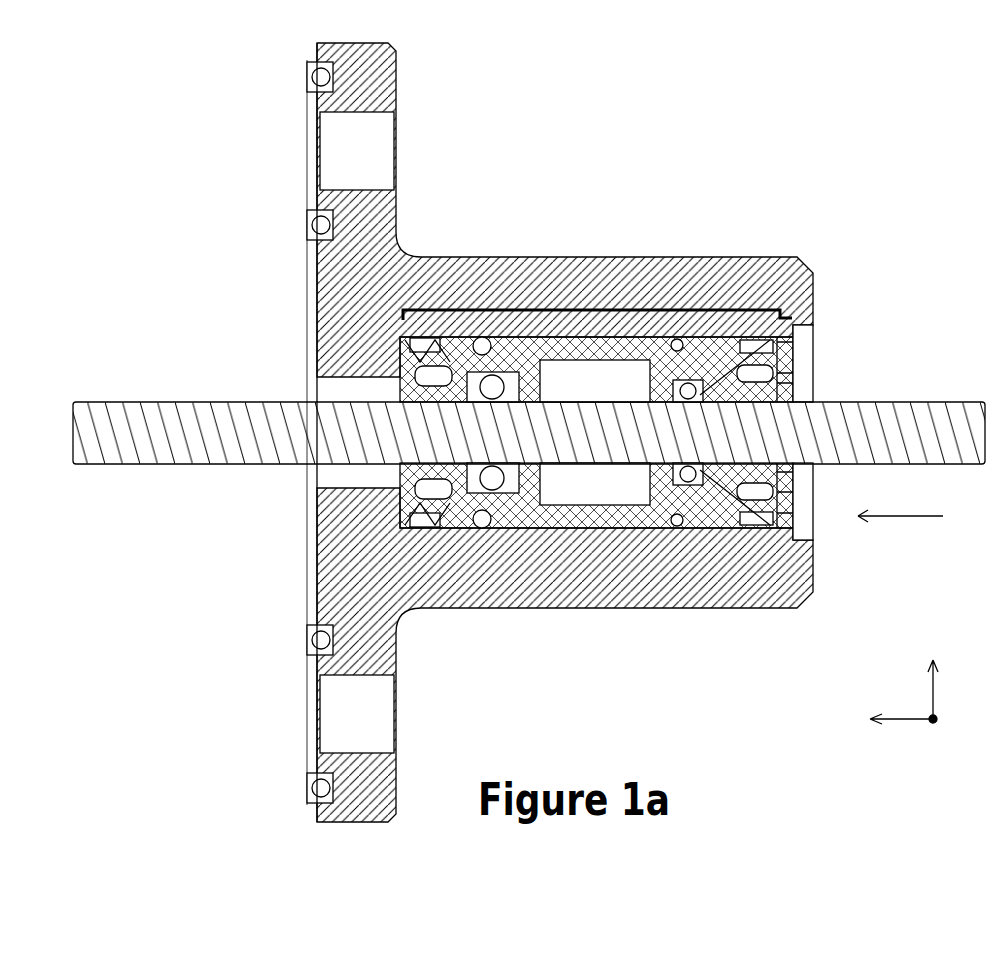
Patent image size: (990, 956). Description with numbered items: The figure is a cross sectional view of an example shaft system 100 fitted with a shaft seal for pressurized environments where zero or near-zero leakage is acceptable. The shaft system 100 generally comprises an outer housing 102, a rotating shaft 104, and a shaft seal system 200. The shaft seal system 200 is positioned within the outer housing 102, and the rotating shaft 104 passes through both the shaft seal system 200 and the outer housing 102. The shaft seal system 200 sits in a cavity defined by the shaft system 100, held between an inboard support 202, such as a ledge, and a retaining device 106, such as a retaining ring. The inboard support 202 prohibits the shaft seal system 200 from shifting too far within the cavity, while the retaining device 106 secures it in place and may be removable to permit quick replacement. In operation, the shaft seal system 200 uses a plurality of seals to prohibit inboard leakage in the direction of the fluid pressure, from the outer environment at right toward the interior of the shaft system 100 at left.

The shaft system 100 is at (946, 80).
The outer housing 102 is at (404, 242).
The rotating shaft 104 is at (930, 402).
The retaining device 106 is at (806, 352).
The shaft seal system 200 is at (593, 310).
The inboard support 202 is at (365, 362).